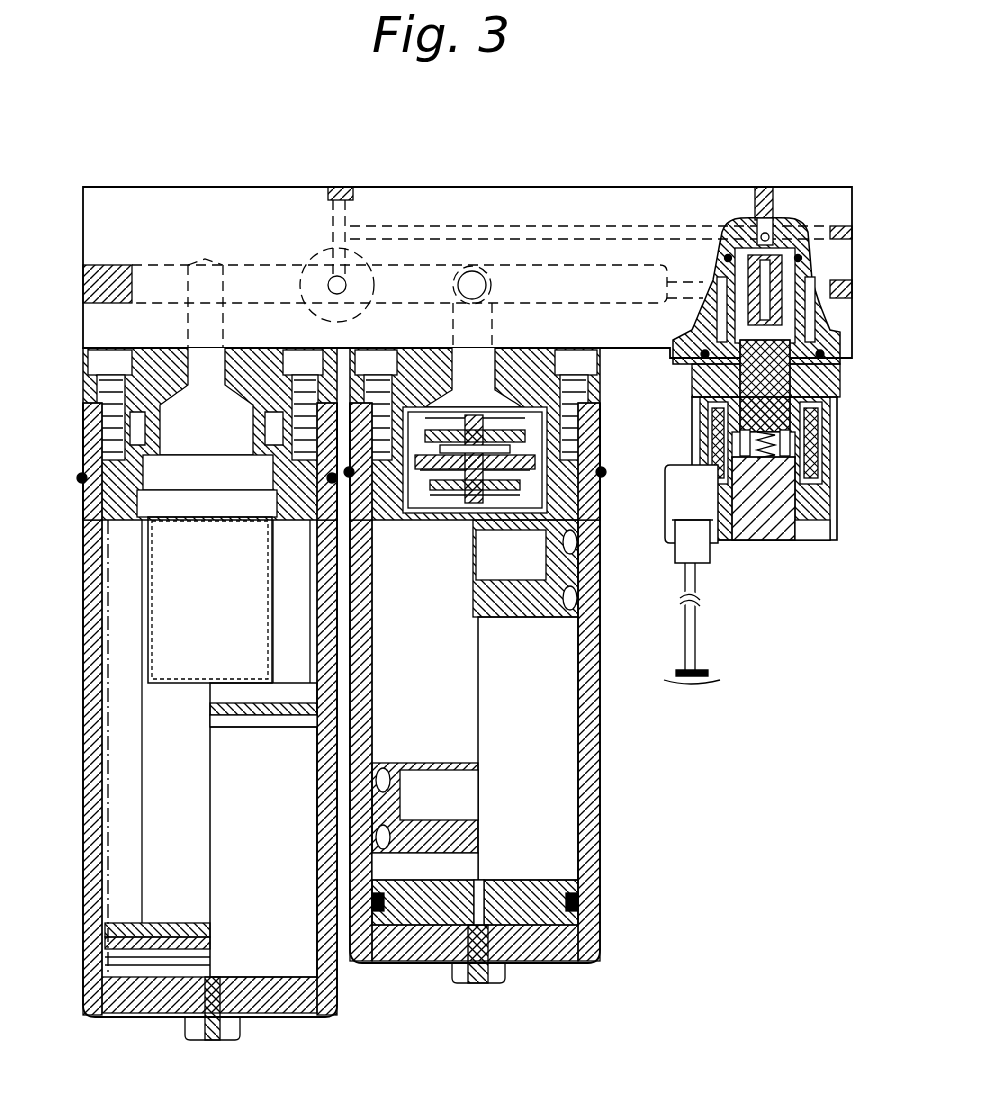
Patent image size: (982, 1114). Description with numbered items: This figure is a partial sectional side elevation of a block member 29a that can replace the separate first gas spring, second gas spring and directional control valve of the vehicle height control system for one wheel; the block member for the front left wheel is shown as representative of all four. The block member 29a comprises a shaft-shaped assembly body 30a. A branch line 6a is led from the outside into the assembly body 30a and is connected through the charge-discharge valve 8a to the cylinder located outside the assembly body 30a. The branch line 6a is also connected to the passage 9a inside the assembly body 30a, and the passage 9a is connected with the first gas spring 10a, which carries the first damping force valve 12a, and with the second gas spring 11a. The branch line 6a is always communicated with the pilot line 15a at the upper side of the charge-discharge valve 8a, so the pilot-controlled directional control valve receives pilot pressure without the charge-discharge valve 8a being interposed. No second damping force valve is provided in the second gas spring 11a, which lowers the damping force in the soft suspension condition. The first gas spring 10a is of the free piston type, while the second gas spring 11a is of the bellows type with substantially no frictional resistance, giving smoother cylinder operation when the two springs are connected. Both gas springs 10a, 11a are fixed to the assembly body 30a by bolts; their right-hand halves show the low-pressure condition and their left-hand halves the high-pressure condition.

The block member 29a is at (702, 150).
The assembly body 30a is at (482, 205).
The passage 9a is at (263, 277).
The pilot line 15a is at (530, 233).
The branch line 6a is at (608, 270).
The charge-discharge valve 8a is at (840, 430).
The first gas spring 10a is at (553, 715).
The second gas spring 11a is at (122, 898).
The first damping force valve 12a is at (550, 483).